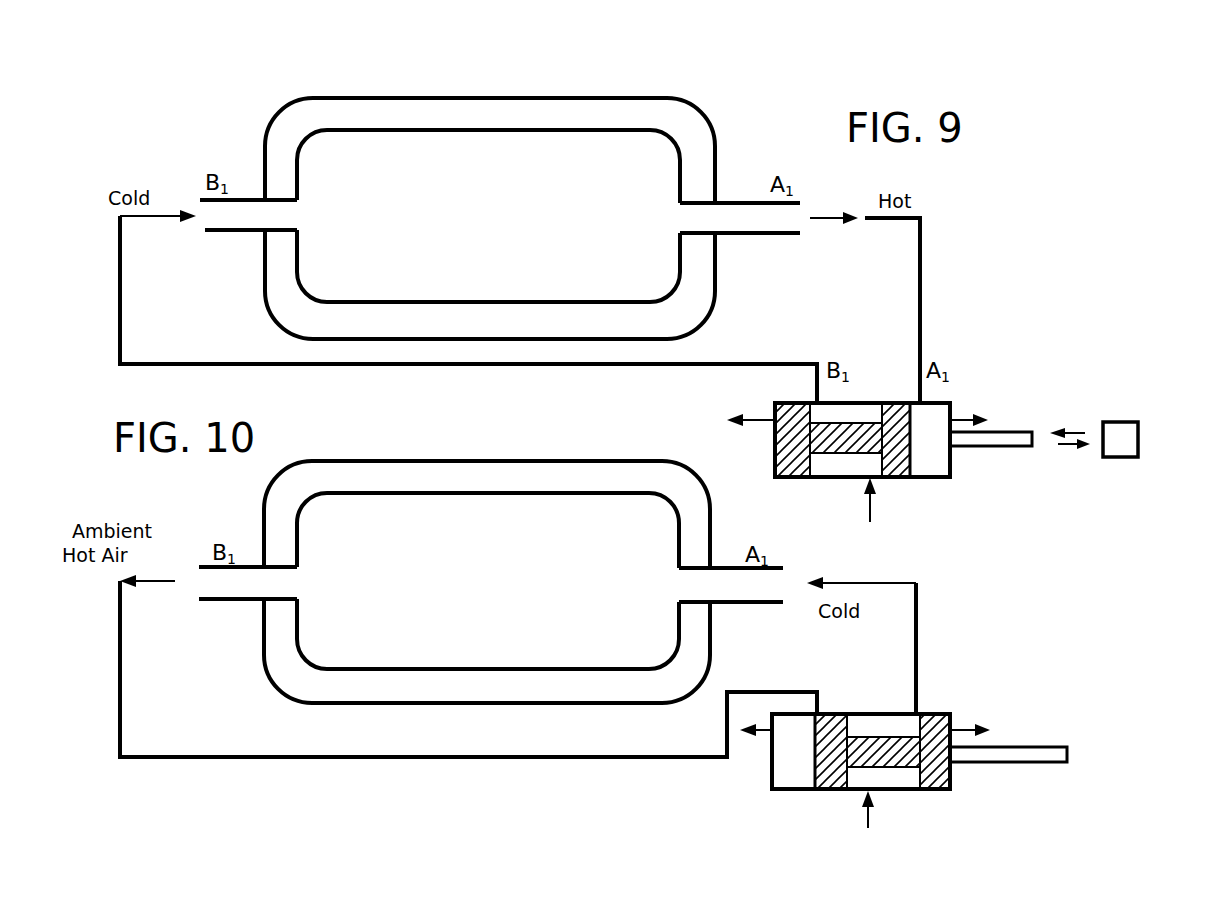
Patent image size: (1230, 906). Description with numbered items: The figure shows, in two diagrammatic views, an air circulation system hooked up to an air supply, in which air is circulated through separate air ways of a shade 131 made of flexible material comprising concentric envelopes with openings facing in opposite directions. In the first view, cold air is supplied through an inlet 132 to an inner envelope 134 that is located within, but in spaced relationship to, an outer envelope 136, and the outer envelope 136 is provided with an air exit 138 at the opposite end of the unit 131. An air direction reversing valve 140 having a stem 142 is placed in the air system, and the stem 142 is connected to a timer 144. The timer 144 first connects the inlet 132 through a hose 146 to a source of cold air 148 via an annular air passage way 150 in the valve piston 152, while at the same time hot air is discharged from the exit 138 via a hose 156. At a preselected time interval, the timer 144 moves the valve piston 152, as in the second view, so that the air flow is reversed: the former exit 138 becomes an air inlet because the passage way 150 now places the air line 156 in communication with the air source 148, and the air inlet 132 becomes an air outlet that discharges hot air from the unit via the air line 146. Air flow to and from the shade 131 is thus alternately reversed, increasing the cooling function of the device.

In FIG. 9, the shade 131 is at (451, 201).
In FIG. 10, the shade 131 is at (541, 446).
In FIG. 9, the inlet 132 is at (235, 232).
In FIG. 10, the inlet 132 is at (228, 602).
In FIG. 9, the inner envelope 134 is at (465, 130).
In FIG. 9, the outer envelope 136 is at (567, 97).
In FIG. 9, the air exit 138 is at (745, 236).
In FIG. 10, the air exit 138 is at (740, 605).
In FIG. 9, the air direction reversing valve 140 is at (850, 466).
In FIG. 10, the air direction reversing valve 140 is at (861, 754).
In FIG. 9, the stem 142 is at (1012, 432).
In FIG. 10, the stem 142 is at (1030, 748).
In FIG. 9, the timer 144 is at (1122, 426).
In FIG. 9, the hose 146 is at (120, 314).
In FIG. 10, the hose 146 is at (120, 675).
In FIG. 9, the source of cold air 148 is at (872, 503).
In FIG. 10, the source of cold air 148 is at (870, 812).
In FIG. 9, the annular air passage way 150 is at (832, 468).
In FIG. 10, the annular air passage way 150 is at (872, 726).
In FIG. 9, the valve piston 152 is at (790, 403).
In FIG. 9, the hose 156 is at (922, 292).
In FIG. 10, the hose 156 is at (918, 648).